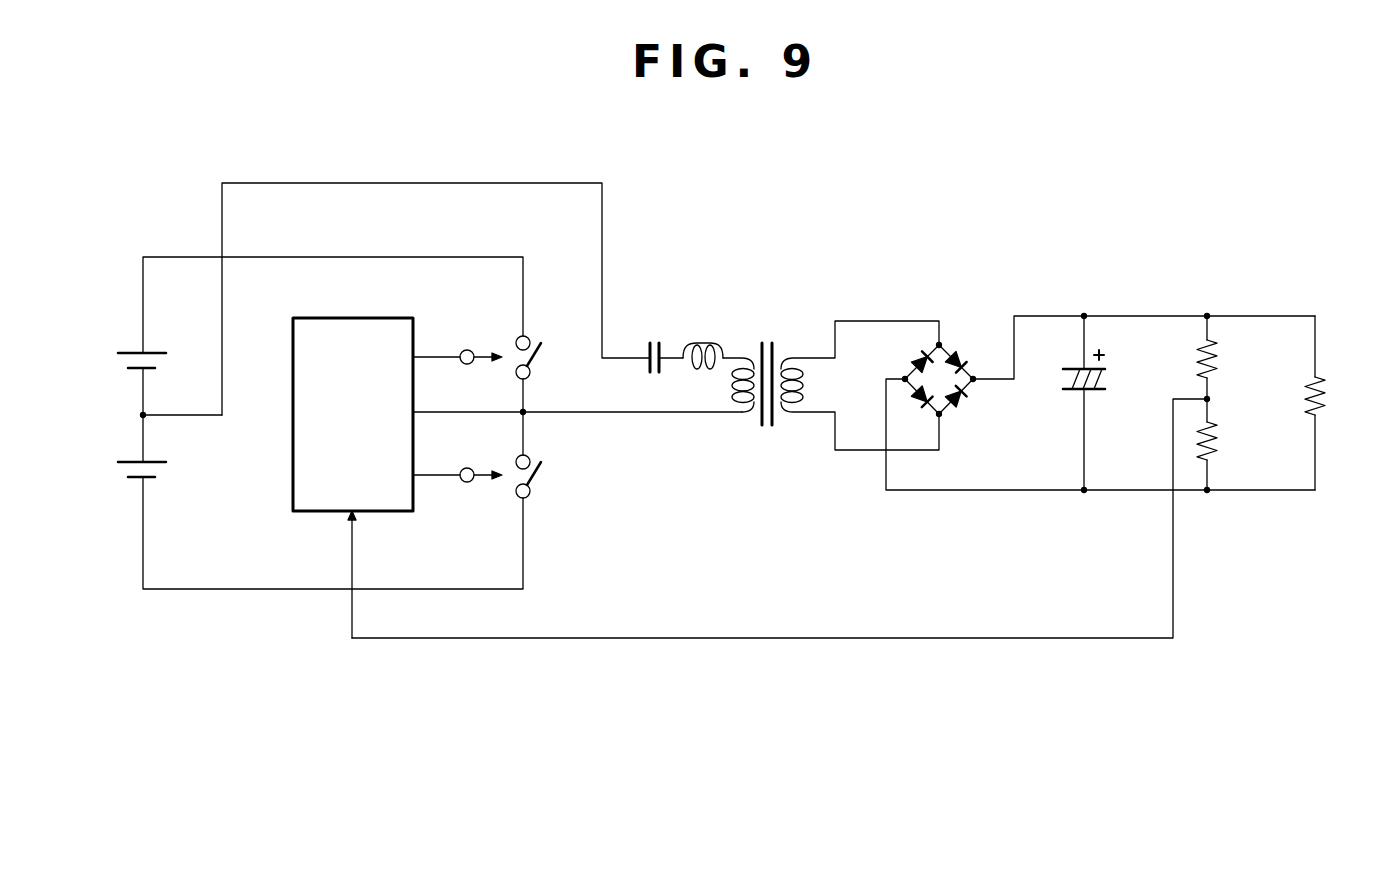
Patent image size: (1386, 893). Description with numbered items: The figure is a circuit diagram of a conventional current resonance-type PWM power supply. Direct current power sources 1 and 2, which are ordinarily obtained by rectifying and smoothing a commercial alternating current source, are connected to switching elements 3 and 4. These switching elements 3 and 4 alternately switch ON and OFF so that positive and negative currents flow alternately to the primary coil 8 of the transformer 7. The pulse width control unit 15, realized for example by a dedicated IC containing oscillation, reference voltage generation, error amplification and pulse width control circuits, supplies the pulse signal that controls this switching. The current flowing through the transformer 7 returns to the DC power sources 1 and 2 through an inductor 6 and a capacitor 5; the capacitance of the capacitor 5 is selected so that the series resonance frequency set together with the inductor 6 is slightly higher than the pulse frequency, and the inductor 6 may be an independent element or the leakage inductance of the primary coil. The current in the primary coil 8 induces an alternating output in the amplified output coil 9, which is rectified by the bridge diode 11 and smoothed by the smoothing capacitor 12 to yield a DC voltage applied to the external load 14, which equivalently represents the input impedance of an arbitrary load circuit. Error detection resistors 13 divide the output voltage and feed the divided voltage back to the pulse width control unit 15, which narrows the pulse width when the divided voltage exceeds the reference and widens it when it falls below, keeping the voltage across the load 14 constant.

The DC power source 1 is at (115, 363).
The DC power source 2 is at (115, 471).
The switching element 3 is at (539, 357).
The switching element 4 is at (539, 477).
The capacitor 5 is at (655, 340).
The inductor 6 is at (702, 340).
The transformer 7 is at (768, 340).
The primary coil 8 is at (728, 380).
The amplified output coil 9 is at (807, 385).
The bridge diode 11 is at (965, 345).
The smoothing capacitor 12 is at (1108, 376).
The error detection resistors 13 is at (1222, 365).
The external load 14 is at (1328, 392).
The pulse width control unit 15 is at (292, 460).